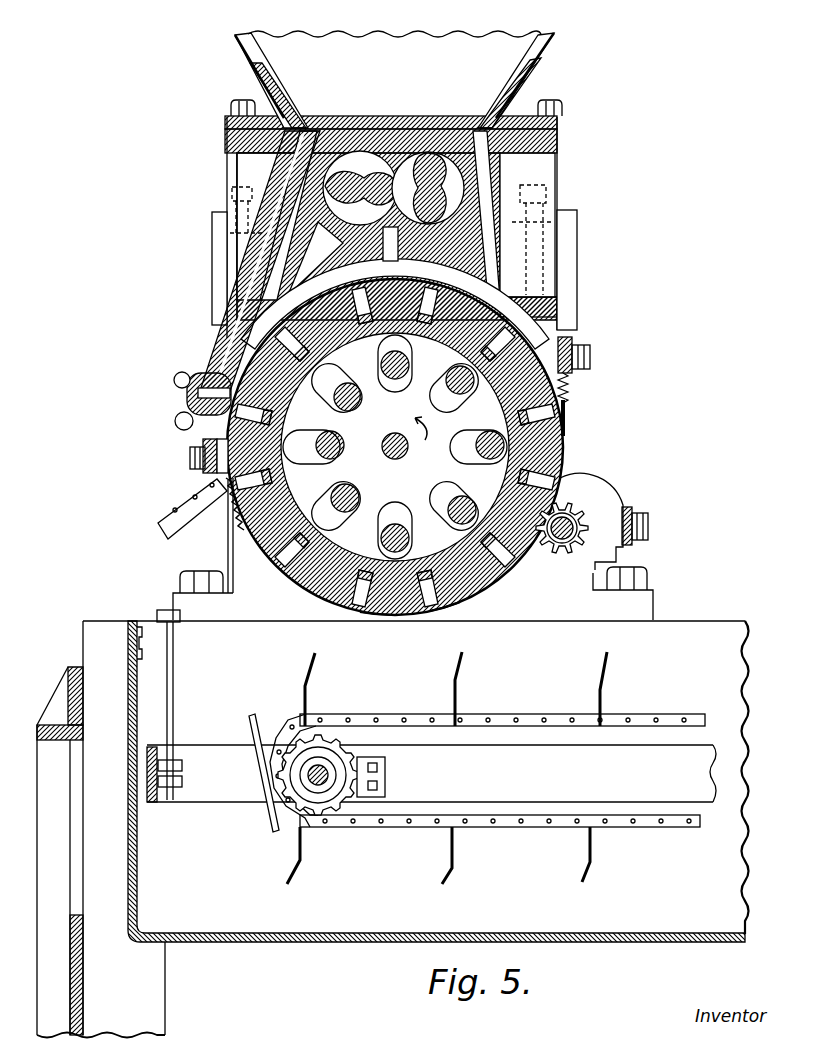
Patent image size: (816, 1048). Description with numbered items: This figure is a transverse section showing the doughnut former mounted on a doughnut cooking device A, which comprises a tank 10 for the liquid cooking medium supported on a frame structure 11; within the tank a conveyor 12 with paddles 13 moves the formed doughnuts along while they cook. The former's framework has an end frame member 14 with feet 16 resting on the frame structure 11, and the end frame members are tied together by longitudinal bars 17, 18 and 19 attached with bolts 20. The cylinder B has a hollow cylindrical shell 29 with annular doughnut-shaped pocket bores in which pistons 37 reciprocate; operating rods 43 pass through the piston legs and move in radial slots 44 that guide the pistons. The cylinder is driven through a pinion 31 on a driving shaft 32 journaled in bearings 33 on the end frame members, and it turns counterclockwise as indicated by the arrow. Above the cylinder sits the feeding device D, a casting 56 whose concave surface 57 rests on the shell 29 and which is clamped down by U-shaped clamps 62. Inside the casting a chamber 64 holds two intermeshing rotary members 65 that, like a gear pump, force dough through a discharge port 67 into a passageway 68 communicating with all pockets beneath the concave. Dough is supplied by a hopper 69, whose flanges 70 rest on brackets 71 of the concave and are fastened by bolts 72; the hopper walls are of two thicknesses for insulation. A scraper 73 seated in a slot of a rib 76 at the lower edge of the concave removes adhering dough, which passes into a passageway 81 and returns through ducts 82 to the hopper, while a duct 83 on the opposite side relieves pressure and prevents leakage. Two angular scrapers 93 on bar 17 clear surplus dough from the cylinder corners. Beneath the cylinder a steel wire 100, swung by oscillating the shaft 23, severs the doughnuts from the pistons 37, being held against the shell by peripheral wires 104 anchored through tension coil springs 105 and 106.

The tank 10 is at (305, 942).
The frame structure 11 is at (165, 1017).
The conveyor 12 is at (507, 829).
The paddles 13 is at (320, 672).
The end frame member 14 is at (230, 542).
The feet 16 is at (175, 607).
The longitudinal bar 17 is at (206, 450).
The longitudinal bar 18 is at (568, 338).
The longitudinal bar 19 is at (632, 506).
The bolts 20 is at (590, 356).
The longitudinal shaft 23 is at (388, 453).
The cylindrical shell 29 is at (292, 575).
The pinion 31 is at (580, 566).
The driving shaft 32 is at (560, 548).
The bearings 33 is at (588, 482).
The pistons 37 is at (432, 610).
The operating rods 43 is at (338, 445).
The radial slots 44 is at (455, 448).
The casting (concave) 56 is at (502, 262).
The concave surface 57 is at (240, 328).
The U-shaped clamps 62 is at (213, 252).
The chamber 64 is at (440, 160).
The rotary members 65 is at (385, 160).
The discharge port 67 is at (390, 250).
The passageway 68 is at (450, 273).
The hopper 69 is at (553, 47).
The flanges 70 is at (225, 123).
The brackets 71 is at (227, 142).
The bolts 72 is at (233, 105).
The scraper 73 is at (178, 418).
The rib 76 is at (176, 384).
The passageway 81 is at (200, 380).
The ducts 82 is at (312, 130).
The duct 83 is at (481, 130).
The scrapers 93 is at (162, 528).
The steel wire 100 is at (383, 618).
The peripheral wires 104 is at (566, 418).
The tension coil spring 105 is at (226, 500).
The tension coil spring 106 is at (568, 390).
The doughnut cooking device A is at (193, 928).
The cylinder B is at (562, 441).
The feeding device D is at (500, 175).